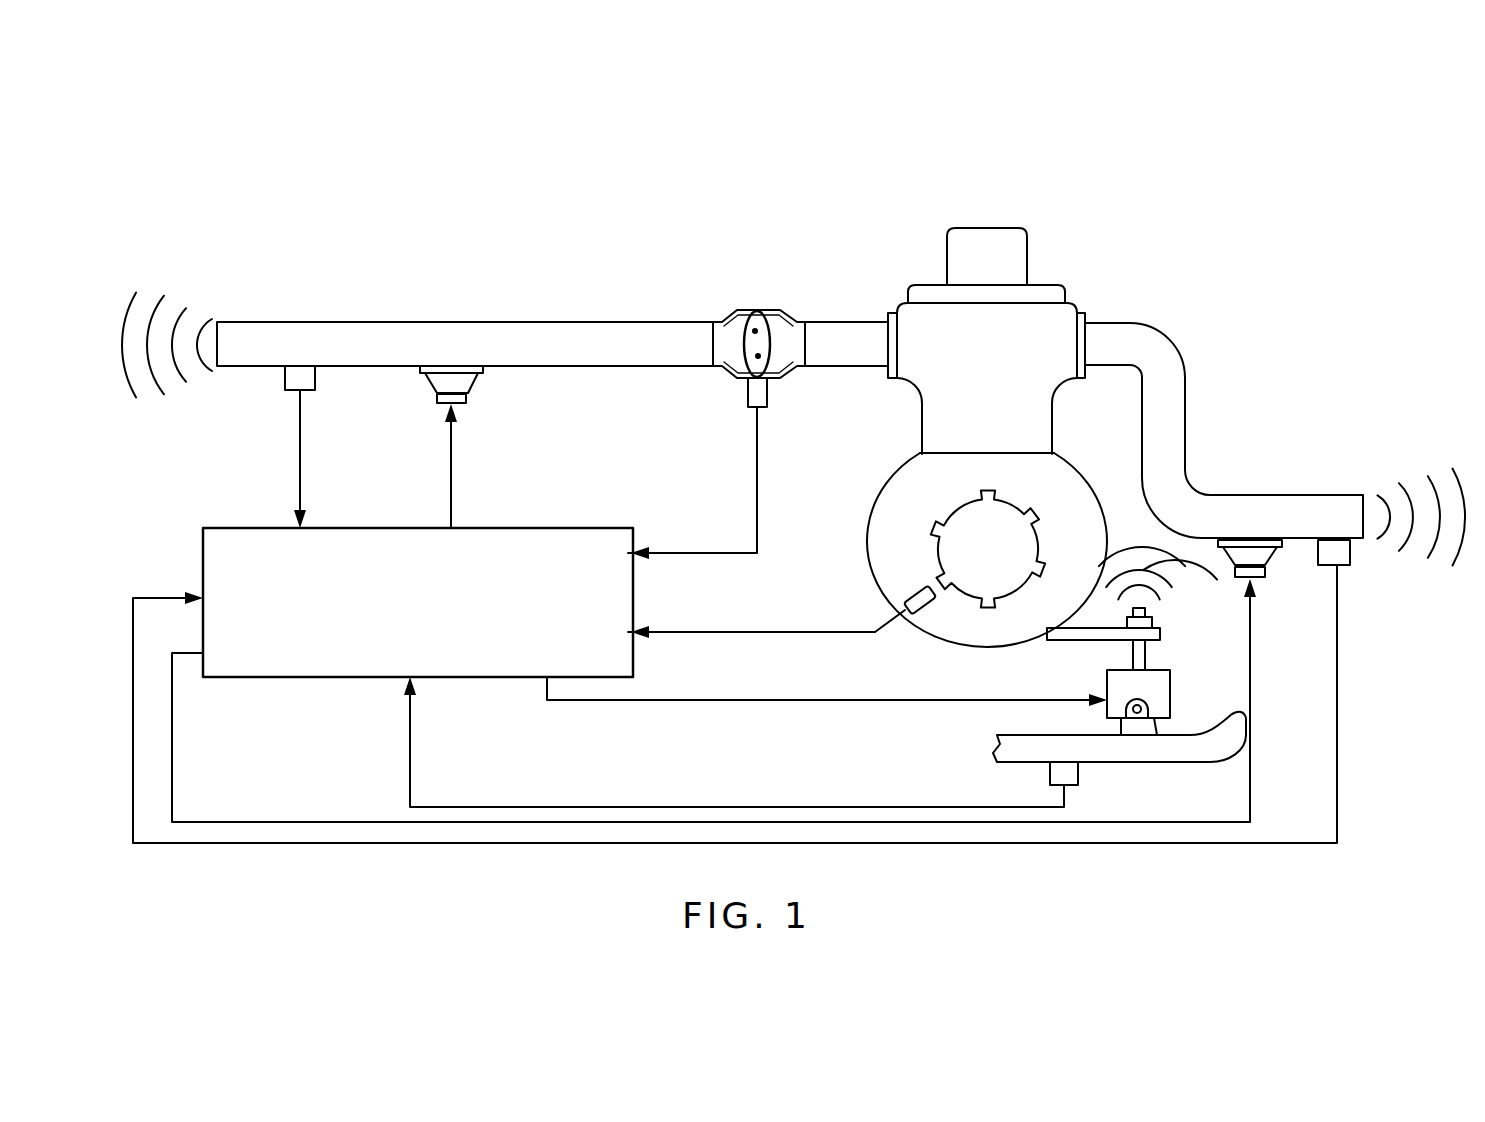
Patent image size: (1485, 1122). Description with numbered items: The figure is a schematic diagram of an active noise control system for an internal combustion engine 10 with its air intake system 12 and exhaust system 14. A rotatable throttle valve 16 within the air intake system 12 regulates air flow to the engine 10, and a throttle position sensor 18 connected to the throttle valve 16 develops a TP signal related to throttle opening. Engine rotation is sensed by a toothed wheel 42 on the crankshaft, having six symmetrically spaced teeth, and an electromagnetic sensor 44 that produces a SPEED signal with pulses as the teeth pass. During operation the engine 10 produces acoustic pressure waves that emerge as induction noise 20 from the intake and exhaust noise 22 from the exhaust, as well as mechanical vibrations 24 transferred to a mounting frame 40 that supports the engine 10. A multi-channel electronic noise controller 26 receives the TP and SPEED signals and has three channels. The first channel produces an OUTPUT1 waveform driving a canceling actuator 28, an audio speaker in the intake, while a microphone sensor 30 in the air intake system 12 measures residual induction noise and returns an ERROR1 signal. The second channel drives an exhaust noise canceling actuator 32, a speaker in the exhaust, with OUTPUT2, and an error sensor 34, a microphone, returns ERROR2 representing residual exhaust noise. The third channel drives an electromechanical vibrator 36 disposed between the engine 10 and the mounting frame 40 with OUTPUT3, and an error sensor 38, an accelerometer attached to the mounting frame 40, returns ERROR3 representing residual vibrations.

The internal combustion engine 10 is at (852, 222).
The air intake system 12 is at (342, 337).
The exhaust system 14 is at (1218, 497).
The rotatable throttle valve 16 is at (748, 328).
The throttle position sensor 18 is at (762, 392).
The engine induction noise 20 is at (154, 300).
The exhaust noise 22 is at (1433, 550).
The mechanical vibrations 24 is at (1161, 584).
The electronic noise controller 26 is at (515, 553).
The canceling actuator 28 is at (463, 384).
The sensor 30 is at (293, 378).
The exhaust noise canceling actuator 32 is at (1267, 553).
The error sensor 34 is at (1338, 548).
The electromechanical vibrator 36 is at (1170, 697).
The error sensor 38 is at (1063, 777).
The mounting frame 40 is at (1103, 753).
The toothed wheel 42 is at (1008, 547).
The electromagnetic sensor 44 is at (907, 593).